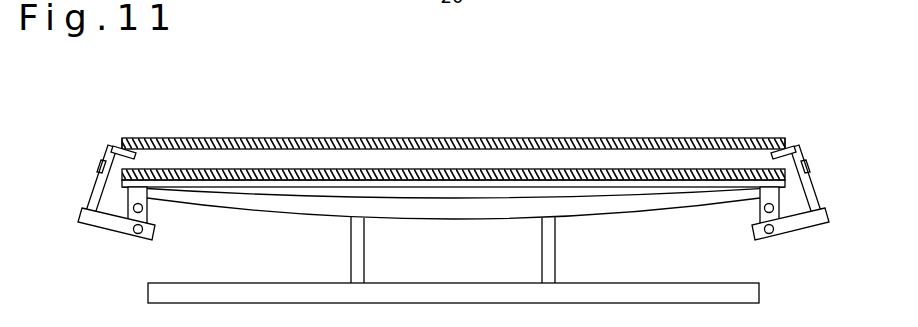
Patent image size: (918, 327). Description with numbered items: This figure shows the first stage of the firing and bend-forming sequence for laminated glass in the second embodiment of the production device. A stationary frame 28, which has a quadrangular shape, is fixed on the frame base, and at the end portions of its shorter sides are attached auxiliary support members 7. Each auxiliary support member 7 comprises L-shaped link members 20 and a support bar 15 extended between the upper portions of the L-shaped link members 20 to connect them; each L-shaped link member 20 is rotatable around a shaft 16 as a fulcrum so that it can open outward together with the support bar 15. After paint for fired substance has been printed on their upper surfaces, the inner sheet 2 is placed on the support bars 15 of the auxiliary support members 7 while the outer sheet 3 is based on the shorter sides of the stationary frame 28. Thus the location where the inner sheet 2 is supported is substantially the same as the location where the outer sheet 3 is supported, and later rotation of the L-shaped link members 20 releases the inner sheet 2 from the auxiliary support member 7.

The inner sheet 2 is at (658, 138).
The outer sheet 3 is at (476, 172).
The auxiliary support member 7 is at (104, 142).
The support bar 15 is at (126, 150).
The shaft 16 is at (136, 233).
The L-shaped link member 20 is at (99, 192).
The stationary frame 28 is at (455, 220).